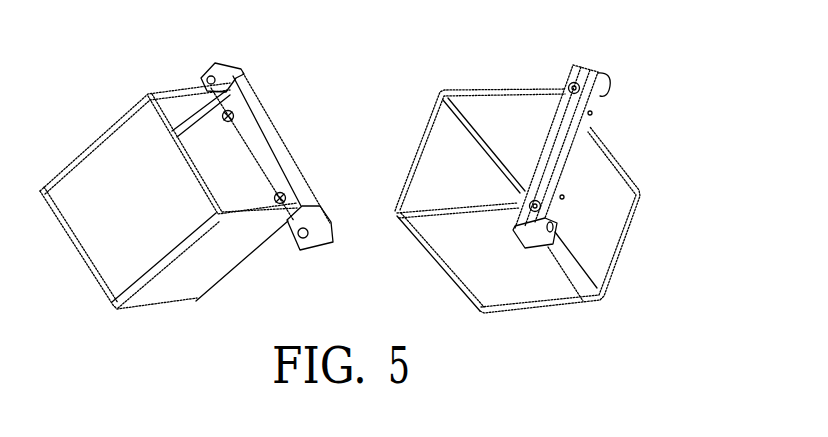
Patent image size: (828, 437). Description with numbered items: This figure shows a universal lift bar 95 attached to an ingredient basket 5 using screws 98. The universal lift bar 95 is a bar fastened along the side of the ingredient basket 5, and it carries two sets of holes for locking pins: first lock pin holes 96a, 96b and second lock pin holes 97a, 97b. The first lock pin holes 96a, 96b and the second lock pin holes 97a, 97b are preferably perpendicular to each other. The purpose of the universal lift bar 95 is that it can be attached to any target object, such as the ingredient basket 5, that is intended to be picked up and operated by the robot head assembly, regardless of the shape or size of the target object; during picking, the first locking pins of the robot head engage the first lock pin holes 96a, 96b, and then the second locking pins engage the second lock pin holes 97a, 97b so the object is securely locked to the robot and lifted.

The ingredient basket 5 is at (453, 168).
The universal lift bar 95 is at (576, 72).
The first lock pin hole 96a is at (554, 232).
The first lock pin hole 96b is at (606, 86).
The second lock pin hole 97a is at (540, 208).
The second lock pin hole 97b is at (580, 90).
The screws 98 is at (233, 113).